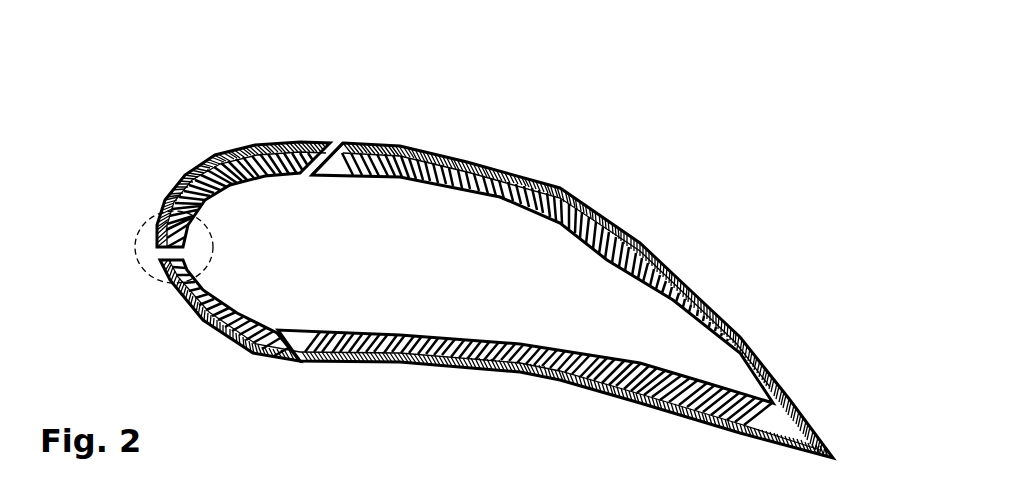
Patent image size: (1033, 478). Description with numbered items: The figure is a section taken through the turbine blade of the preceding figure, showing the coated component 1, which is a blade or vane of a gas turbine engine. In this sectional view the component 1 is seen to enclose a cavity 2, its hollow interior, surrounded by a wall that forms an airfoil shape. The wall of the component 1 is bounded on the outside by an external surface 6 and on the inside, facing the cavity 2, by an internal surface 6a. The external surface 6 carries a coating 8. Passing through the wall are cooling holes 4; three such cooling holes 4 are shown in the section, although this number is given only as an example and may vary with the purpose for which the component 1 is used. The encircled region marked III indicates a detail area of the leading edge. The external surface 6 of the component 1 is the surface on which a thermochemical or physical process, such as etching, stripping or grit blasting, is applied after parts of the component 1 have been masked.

The coated component 1 is at (428, 138).
The cavity 2 is at (275, 255).
The cooling holes 4 is at (334, 150).
The external surface 6 is at (507, 175).
The internal surface 6a is at (568, 221).
The coating 8 is at (293, 146).
The detail region III is at (153, 220).